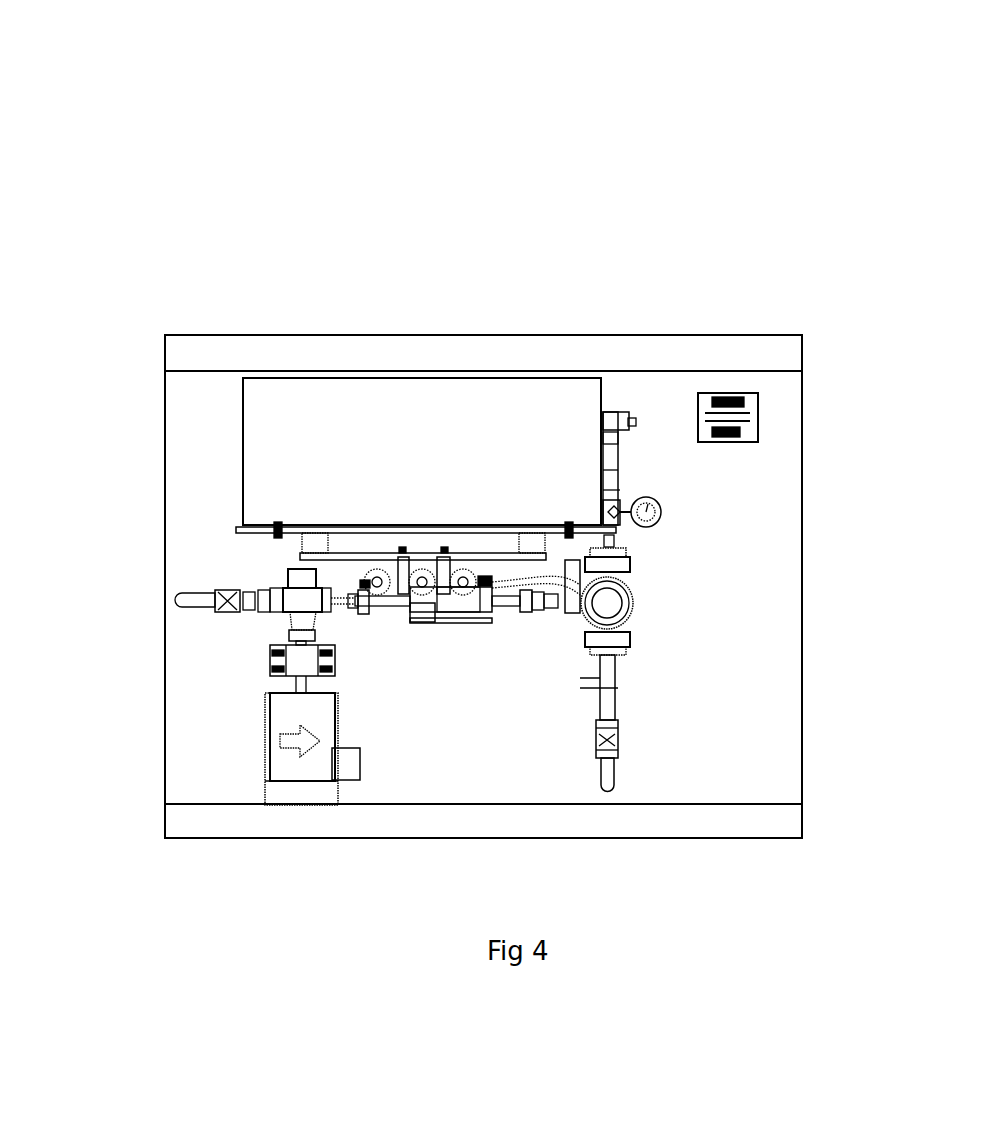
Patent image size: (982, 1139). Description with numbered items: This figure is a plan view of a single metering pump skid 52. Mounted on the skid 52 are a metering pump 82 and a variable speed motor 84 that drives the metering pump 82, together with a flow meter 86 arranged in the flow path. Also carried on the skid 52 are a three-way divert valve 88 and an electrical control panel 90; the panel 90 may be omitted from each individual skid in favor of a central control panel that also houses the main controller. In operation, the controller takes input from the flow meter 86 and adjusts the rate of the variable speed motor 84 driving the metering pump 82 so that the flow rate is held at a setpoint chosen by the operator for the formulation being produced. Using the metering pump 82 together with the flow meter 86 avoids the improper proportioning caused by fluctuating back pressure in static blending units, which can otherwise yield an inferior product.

The metering pump skid 52 is at (513, 130).
The metering pump 82 is at (290, 587).
The variable speed motor 84 is at (275, 718).
The flow meter 86 is at (456, 622).
The 3-way divert valve 88 is at (630, 622).
The electrical control panel 90 is at (503, 385).